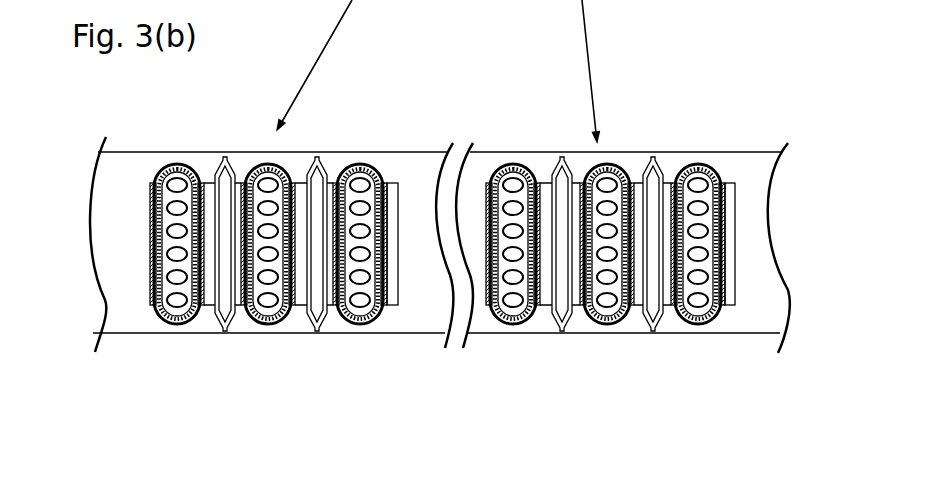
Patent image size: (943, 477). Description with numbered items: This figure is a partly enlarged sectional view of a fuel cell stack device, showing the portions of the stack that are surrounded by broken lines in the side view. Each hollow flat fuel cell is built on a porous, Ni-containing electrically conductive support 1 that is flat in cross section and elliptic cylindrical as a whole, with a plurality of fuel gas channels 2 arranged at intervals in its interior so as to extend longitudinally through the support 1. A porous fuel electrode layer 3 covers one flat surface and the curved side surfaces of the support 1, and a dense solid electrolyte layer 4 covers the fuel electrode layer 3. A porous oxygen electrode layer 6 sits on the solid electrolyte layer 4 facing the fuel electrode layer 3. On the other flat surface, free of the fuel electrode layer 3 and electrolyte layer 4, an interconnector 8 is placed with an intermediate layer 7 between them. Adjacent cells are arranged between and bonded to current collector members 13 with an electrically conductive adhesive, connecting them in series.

The electrically conductive support 1 is at (680, 328).
The fuel gas channels 2 is at (678, 313).
The fuel electrode layer 3 is at (713, 322).
The solid electrolyte layer 4 is at (699, 322).
The oxygen electrode layer 6 is at (672, 192).
The intermediate layer 7 is at (715, 188).
The interconnector 8 is at (727, 186).
The current collector members 13 is at (655, 166).